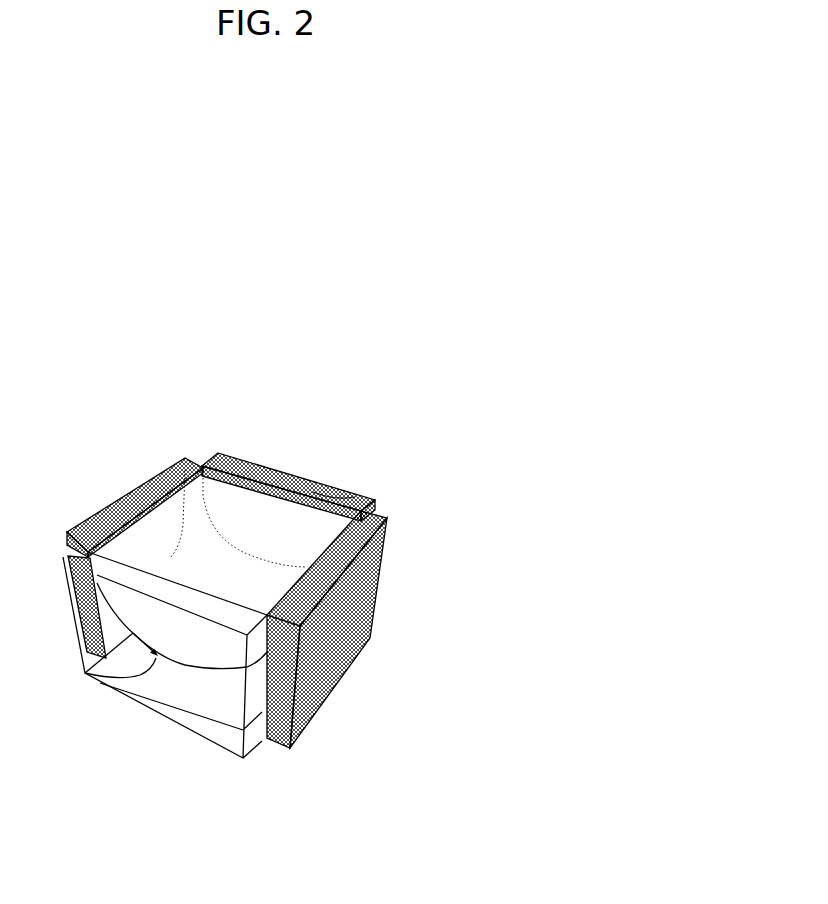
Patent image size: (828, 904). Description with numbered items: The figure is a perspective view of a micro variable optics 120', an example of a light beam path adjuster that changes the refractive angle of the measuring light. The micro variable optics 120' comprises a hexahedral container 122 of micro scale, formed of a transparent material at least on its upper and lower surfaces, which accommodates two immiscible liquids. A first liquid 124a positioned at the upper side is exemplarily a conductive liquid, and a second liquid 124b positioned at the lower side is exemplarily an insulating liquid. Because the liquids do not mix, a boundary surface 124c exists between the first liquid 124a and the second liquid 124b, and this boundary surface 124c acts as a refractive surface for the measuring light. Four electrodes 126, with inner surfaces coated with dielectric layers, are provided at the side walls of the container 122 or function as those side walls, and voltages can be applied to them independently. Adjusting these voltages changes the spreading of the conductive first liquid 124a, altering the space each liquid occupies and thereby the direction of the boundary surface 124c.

The micro variable optics 120' is at (280, 555).
The container 122 is at (288, 517).
The first liquid 124a is at (207, 642).
The second liquid 124b is at (240, 703).
The boundary surface 124c is at (86, 675).
The electrodes 126 is at (123, 492).